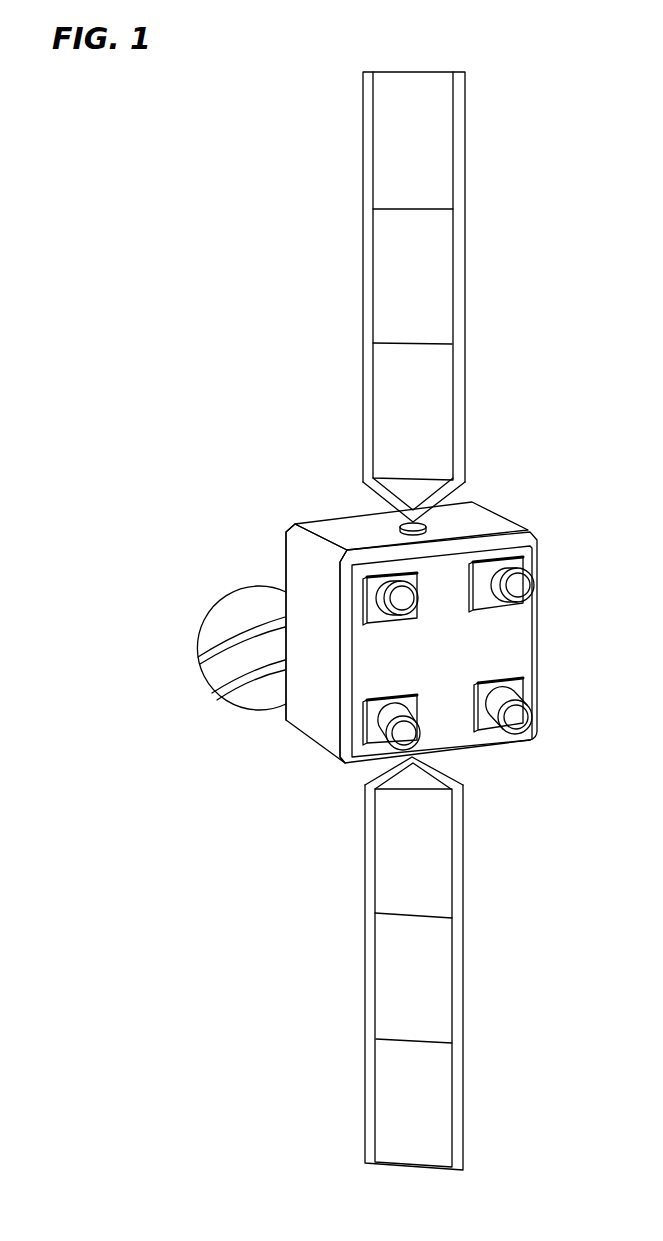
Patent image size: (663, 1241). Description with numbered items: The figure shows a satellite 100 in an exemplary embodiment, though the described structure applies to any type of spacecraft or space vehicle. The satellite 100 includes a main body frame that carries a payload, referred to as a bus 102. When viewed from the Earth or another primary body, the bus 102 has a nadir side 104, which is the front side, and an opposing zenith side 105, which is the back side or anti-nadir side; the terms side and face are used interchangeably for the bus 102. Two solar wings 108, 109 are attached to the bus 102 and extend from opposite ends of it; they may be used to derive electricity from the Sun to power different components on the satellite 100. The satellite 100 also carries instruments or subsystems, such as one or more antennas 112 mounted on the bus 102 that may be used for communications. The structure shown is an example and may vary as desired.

The satellite 100 is at (161, 353).
The bus 102 is at (327, 528).
The nadir side 104 is at (273, 530).
The zenith side 105 is at (519, 648).
The solar wing 108 is at (460, 262).
The solar wing 109 is at (457, 927).
The antenna 112 is at (218, 618).